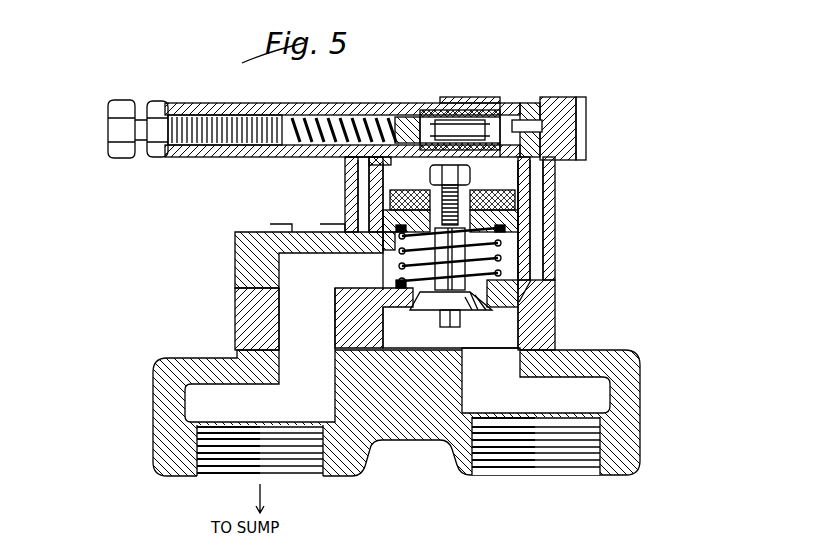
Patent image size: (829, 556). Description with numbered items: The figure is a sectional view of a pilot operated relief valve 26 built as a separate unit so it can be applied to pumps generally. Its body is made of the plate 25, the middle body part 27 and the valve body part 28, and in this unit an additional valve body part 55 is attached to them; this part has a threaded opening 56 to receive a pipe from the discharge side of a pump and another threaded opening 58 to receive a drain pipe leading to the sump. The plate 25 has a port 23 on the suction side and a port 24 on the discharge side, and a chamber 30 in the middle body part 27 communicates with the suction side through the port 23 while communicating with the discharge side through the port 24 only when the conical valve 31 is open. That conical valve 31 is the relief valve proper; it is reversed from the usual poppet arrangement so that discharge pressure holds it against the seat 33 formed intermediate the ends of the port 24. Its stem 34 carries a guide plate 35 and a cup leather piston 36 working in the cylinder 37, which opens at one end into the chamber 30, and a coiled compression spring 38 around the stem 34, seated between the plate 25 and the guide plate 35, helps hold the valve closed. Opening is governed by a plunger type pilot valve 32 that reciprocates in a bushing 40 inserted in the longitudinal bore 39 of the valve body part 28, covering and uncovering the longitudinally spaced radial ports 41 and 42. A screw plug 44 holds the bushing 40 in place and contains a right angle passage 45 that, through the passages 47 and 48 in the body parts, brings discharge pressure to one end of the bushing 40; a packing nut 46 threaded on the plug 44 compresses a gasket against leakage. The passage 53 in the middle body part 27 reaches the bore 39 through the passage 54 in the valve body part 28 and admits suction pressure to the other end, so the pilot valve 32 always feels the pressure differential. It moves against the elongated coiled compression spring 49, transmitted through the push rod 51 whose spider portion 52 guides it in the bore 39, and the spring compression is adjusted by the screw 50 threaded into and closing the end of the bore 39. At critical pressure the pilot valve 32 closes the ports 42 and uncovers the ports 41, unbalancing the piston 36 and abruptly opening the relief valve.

The port 23 is at (324, 319).
The port 24 is at (450, 327).
The plate 25 is at (548, 322).
The pilot operated relief valve 26 is at (568, 232).
The middle body part 27 is at (556, 258).
The valve body part 28 is at (545, 124).
The chamber 30 is at (309, 256).
The conical valve 31 is at (440, 318).
The pilot valve 32 is at (522, 130).
The seat 33 is at (408, 300).
The stem 34 is at (449, 259).
The guide plate 35 is at (545, 222).
The cup leather piston 36 is at (495, 182).
The cylinder 37 is at (362, 185).
The coiled compression spring 38 is at (400, 256).
The longitudinal bore 39 is at (425, 128).
The bushing 40 is at (470, 126).
The radial ports 41 is at (497, 128).
The radial ports 42 is at (460, 120).
The screw plug 44 is at (588, 124).
The right angle passage 45 is at (560, 112).
The packing nut 46 is at (556, 174).
The passage 47 is at (528, 297).
The passage 48 is at (536, 200).
The coiled compression spring 49 is at (343, 118).
The screw 50 is at (108, 130).
The push rod 51 is at (420, 152).
The spider portion 52 is at (406, 120).
The passage 53 is at (350, 205).
The passage 54 is at (350, 160).
The valve body part 55 is at (624, 398).
The threaded opening 56 is at (572, 458).
The threaded opening 58 is at (300, 462).